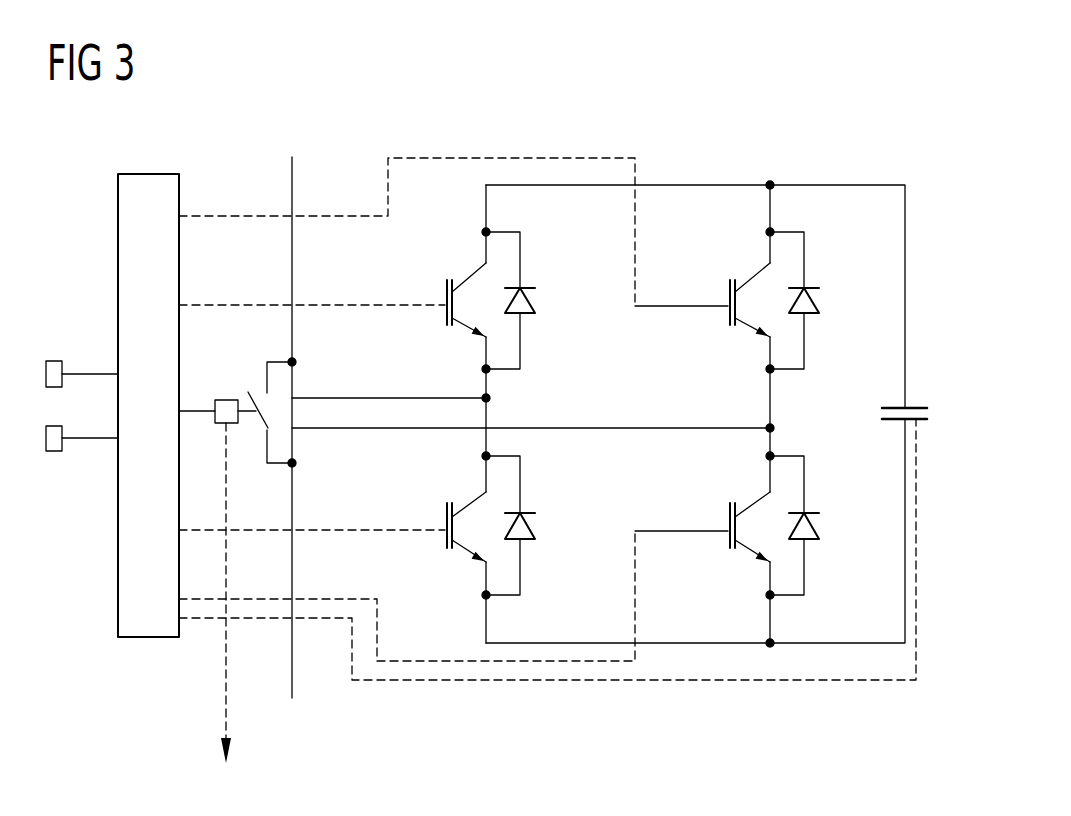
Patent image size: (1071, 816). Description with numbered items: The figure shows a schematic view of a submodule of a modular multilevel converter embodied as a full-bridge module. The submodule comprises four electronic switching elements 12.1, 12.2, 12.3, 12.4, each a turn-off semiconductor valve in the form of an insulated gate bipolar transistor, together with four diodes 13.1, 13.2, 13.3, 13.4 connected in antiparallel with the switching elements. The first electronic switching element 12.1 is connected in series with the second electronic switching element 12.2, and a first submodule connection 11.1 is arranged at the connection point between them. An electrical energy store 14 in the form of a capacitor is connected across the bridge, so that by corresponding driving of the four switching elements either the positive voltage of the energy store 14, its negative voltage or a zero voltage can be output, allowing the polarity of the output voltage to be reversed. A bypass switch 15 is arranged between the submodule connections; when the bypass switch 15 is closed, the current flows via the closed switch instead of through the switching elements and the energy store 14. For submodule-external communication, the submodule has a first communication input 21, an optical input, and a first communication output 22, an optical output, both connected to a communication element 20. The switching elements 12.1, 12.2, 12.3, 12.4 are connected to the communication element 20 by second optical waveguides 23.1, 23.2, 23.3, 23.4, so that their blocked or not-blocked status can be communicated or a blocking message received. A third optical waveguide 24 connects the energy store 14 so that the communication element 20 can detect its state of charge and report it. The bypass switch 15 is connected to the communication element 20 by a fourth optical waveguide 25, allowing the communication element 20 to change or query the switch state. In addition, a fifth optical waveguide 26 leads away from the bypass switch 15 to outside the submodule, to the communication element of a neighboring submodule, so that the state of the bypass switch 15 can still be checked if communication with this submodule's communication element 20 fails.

The first submodule connection 11.1 is at (292, 188).
The first electronic switching element 12.1 is at (445, 292).
The second electronic switching element 12.2 is at (445, 517).
The third electronic switching element 12.3 is at (728, 292).
The fourth electronic switching element 12.4 is at (728, 517).
The first diode 13.1 is at (532, 300).
The second diode 13.2 is at (555, 508).
The third diode 13.3 is at (838, 283).
The fourth diode 13.4 is at (838, 508).
The electrical energy store 14 is at (882, 413).
The bypass switch 15 is at (228, 400).
The communication element 20 is at (148, 174).
The first communication input 21 is at (55, 361).
The first communication output 22 is at (55, 452).
The second optical waveguide 23.1 is at (340, 305).
The second optical waveguide 23.2 is at (340, 530).
The second optical waveguide 23.3 is at (503, 158).
The second optical waveguide 23.4 is at (442, 661).
The third optical waveguide 24 is at (643, 681).
The fourth optical waveguide 25 is at (197, 413).
The fifth optical waveguide 26 is at (224, 703).